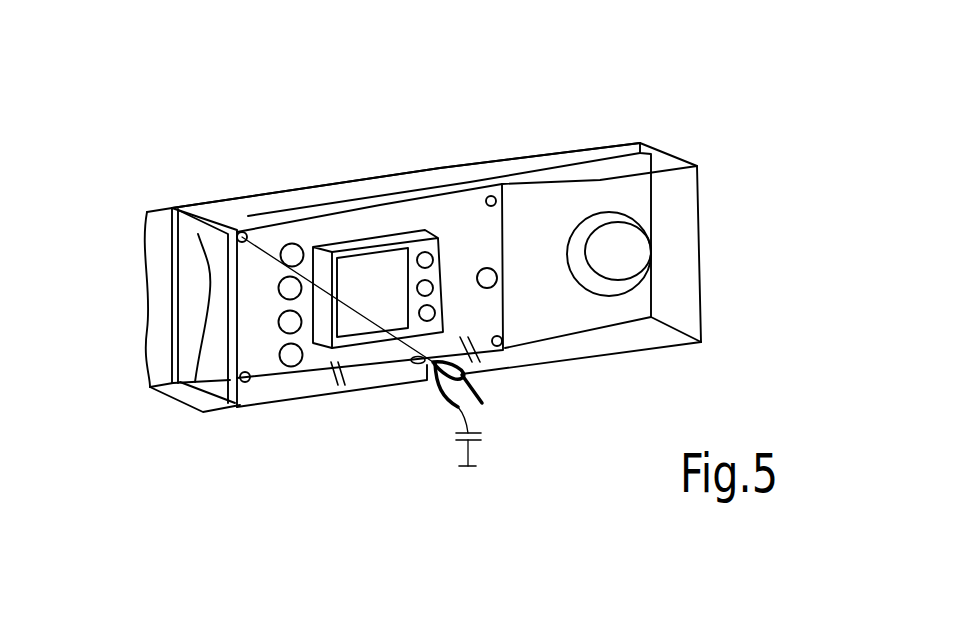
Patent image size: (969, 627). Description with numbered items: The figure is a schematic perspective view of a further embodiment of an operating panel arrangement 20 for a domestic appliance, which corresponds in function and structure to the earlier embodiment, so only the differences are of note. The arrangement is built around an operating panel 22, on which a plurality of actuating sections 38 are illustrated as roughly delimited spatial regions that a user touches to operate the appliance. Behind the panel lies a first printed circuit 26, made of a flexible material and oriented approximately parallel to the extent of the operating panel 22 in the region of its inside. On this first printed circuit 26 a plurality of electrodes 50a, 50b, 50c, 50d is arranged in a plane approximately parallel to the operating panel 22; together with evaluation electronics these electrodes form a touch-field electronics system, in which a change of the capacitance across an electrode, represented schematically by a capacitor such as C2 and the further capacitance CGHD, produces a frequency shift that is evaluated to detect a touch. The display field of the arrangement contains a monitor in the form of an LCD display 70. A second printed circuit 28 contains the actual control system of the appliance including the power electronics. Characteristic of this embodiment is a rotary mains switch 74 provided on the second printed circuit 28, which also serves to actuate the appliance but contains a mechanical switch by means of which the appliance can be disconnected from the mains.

The operating panel arrangement 20 is at (748, 139).
The operating panel 22 is at (682, 293).
The first printed circuit 26 is at (408, 220).
The second printed circuit 28 is at (625, 172).
The actuating sections 38 is at (285, 320).
The electrode 50a is at (241, 232).
The electrode 50b is at (247, 383).
The electrode 50c is at (488, 197).
The electrode 50d is at (507, 348).
The LCD display 70 is at (365, 250).
The rotary mains switch 74 is at (637, 238).
The capacitance C2 is at (352, 395).
The ground coupling capacitance CGHD is at (471, 412).